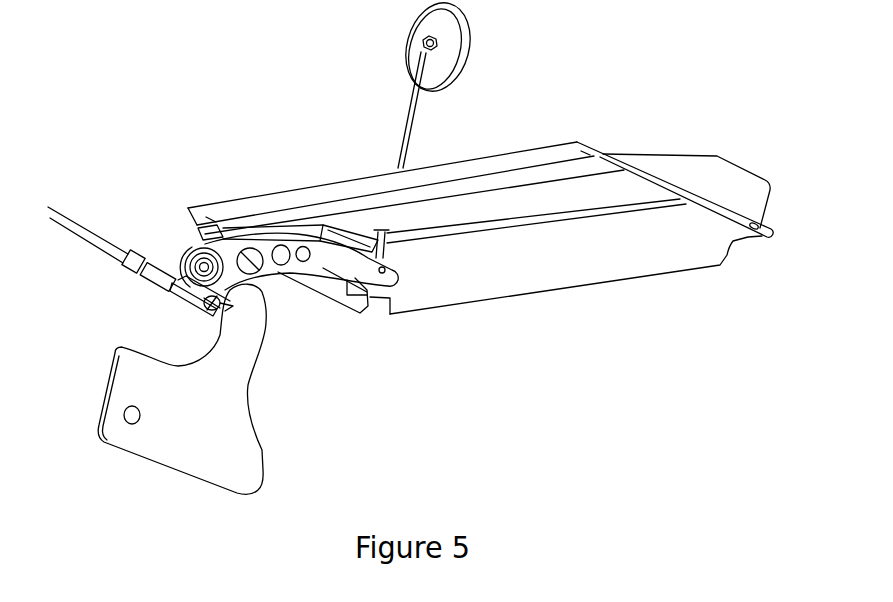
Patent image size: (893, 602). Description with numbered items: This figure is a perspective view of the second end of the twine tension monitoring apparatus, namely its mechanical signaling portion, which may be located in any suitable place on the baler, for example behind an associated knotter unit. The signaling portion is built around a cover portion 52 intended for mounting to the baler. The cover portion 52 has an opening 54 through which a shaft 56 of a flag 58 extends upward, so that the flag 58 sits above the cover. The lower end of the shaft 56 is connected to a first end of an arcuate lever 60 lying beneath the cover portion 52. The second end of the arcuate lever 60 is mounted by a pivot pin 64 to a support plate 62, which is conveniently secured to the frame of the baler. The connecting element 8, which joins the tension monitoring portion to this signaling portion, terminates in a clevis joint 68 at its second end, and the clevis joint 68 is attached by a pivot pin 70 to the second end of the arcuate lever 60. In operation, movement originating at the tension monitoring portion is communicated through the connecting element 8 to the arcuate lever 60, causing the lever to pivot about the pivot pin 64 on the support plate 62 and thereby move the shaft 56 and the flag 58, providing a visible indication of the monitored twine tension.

The connecting element 8 is at (66, 225).
The cover portion 52 is at (631, 256).
The opening 54 is at (400, 226).
The shaft 56 is at (412, 126).
The flag 58 is at (470, 44).
The arcuate lever 60 is at (333, 258).
The support plate 62 is at (253, 477).
The pivot pin 64 is at (192, 249).
The clevis joint 68 is at (180, 290).
The pivot pin 70 is at (222, 316).